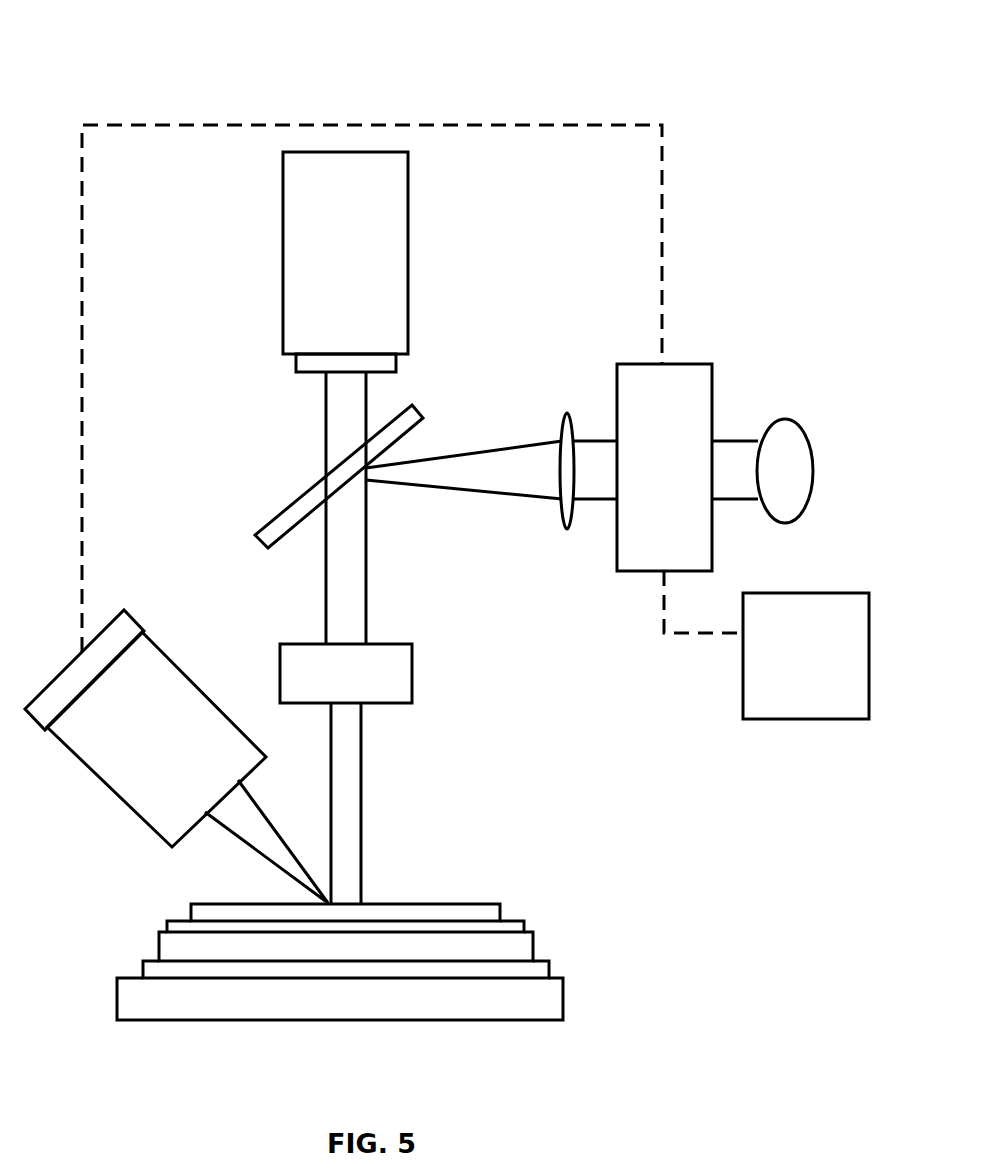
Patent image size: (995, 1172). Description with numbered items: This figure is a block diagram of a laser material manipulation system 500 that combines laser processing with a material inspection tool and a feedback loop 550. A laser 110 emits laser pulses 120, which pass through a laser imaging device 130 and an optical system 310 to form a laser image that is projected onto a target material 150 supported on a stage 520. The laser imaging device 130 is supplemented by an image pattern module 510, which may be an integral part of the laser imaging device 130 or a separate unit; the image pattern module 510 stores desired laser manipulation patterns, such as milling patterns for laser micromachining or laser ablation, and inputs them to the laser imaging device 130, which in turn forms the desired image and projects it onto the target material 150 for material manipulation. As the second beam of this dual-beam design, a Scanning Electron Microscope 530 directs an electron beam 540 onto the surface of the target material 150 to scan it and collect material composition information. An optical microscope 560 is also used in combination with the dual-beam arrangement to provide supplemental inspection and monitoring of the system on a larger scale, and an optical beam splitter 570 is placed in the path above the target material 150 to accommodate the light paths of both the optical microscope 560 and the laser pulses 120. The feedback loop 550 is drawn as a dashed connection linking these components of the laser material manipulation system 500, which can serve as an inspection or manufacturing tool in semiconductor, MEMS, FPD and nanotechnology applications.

The laser material manipulation system 500 is at (158, 71).
The feedback loop 550 is at (82, 215).
The optical microscope 560 is at (345, 262).
The optical beam splitter 570 is at (286, 503).
The optical system 310 is at (567, 412).
The laser imaging device 130 is at (643, 467).
The laser pulses 120 is at (737, 437).
The laser 110 is at (785, 471).
The image pattern module 510 is at (806, 656).
The Scanning Electron Microscope 530 is at (145, 728).
The electron beam 540 is at (277, 830).
The target material 150 is at (377, 902).
The stage 520 is at (563, 994).